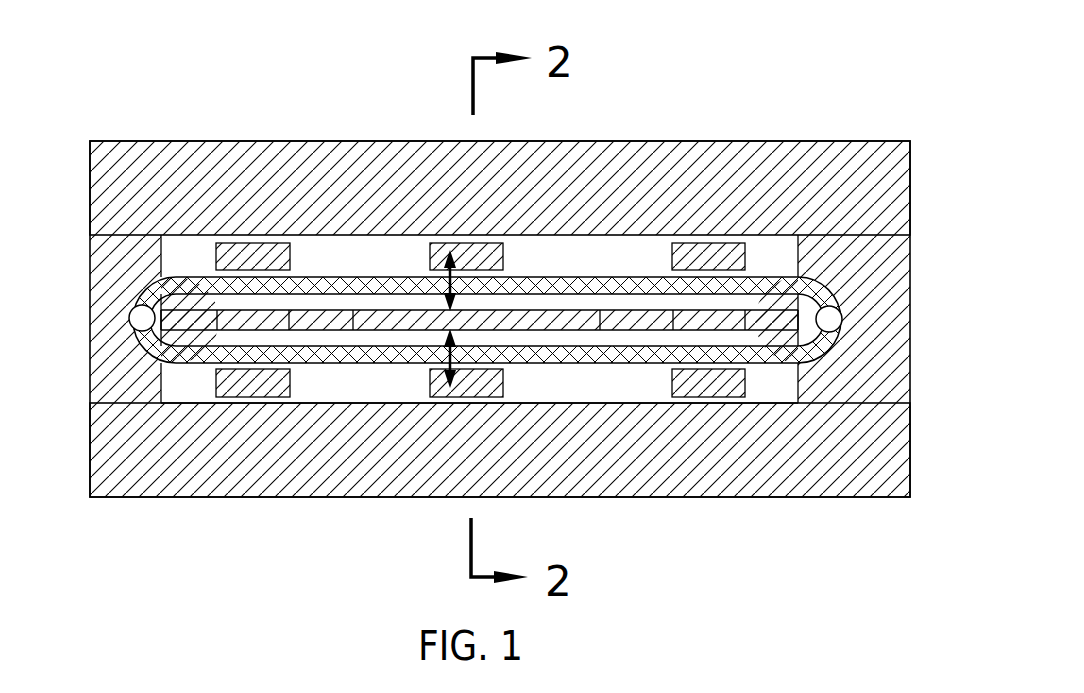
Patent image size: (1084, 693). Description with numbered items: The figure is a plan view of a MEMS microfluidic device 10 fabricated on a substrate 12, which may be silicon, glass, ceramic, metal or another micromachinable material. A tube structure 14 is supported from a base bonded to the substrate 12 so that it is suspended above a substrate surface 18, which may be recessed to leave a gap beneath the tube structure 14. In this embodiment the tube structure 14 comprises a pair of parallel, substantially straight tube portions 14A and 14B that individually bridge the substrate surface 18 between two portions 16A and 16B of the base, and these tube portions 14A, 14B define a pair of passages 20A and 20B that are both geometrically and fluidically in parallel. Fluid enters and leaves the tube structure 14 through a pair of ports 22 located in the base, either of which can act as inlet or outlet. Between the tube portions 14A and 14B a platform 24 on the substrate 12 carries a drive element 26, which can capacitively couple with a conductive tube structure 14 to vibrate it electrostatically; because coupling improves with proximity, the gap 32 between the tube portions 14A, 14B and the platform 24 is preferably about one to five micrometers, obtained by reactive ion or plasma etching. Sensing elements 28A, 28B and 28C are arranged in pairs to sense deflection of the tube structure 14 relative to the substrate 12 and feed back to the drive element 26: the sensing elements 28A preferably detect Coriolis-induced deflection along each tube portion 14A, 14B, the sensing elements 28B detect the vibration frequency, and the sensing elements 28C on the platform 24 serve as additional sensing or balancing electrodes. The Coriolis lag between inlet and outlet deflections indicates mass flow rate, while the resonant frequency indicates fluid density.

The MEMS microfluidic device 10 is at (226, 97).
The substrate 12 is at (773, 488).
The tube structure 14 is at (403, 244).
The first tube portion 14A is at (561, 255).
The second tube portion 14B is at (613, 393).
The first base portion 16A is at (148, 248).
The second base portion 16B is at (876, 395).
The substrate surface 18 is at (640, 392).
The first passage 20A is at (373, 288).
The second passage 20B is at (198, 362).
The port 22 is at (138, 318).
The platform 24 is at (521, 362).
The drive element 26 is at (377, 325).
The sensing elements 28A is at (255, 252).
The sensing elements 28B is at (462, 245).
The sensing elements 28C is at (228, 317).
The gap 32 is at (540, 243).